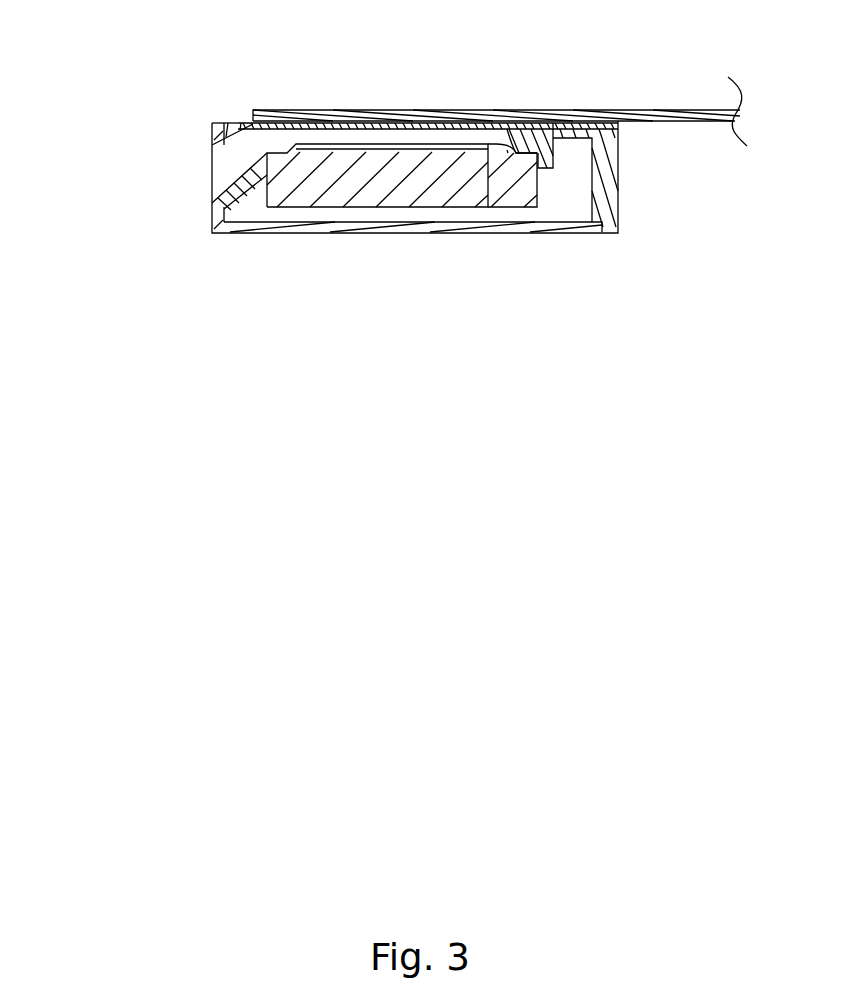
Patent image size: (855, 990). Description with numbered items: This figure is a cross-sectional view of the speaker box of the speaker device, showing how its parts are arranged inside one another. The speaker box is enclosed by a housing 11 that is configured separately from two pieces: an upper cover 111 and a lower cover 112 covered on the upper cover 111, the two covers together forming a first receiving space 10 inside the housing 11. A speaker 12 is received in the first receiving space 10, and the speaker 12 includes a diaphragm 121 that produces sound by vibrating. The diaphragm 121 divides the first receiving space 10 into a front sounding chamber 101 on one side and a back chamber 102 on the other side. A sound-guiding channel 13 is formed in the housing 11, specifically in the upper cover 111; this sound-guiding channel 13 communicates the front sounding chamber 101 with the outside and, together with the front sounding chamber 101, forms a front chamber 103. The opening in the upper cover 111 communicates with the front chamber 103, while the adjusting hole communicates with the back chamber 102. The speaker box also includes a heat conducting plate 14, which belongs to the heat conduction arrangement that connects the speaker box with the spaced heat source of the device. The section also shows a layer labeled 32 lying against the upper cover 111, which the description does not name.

The first receiving space 10 is at (70, 127).
The front sounding chamber 101 is at (338, 133).
The back chamber 102 is at (232, 209).
The front chamber 103 is at (132, 95).
The sound-guiding channel 13 is at (214, 163).
The housing 11 is at (749, 182).
The upper cover 111 is at (607, 189).
The lower cover 112 is at (548, 228).
The speaker 12 is at (386, 183).
The diaphragm 121 is at (421, 142).
The heat conducting plate 14 is at (488, 150).
The adhesive layer 32 is at (360, 118).